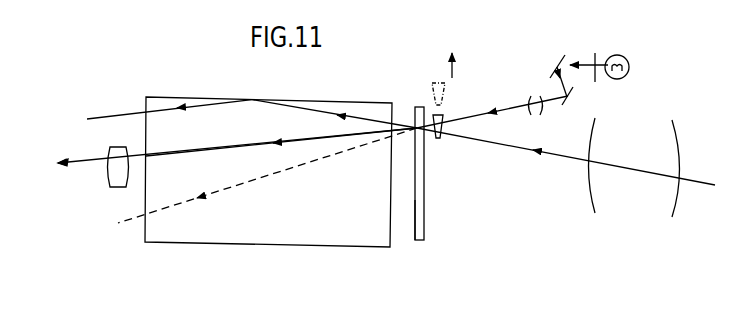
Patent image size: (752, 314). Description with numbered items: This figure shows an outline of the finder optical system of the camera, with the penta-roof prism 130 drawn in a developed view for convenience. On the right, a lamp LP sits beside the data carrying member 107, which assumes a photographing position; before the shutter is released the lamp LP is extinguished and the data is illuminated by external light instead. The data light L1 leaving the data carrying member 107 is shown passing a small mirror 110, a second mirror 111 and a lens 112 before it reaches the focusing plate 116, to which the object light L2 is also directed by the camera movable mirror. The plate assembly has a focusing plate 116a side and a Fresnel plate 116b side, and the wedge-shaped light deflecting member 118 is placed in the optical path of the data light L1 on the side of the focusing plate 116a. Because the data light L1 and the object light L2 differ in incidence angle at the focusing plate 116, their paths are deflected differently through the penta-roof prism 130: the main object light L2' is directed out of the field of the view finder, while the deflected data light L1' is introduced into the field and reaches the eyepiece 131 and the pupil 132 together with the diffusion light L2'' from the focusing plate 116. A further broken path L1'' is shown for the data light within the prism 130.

The data carrying member 107 is at (597, 53).
The mirror 110 is at (563, 55).
The mirror 111 is at (573, 93).
The lens 112 is at (530, 97).
The focusing plate 116 is at (421, 241).
The focusing plate 116a is at (423, 207).
The Fresnel plate 116b is at (413, 162).
The light deflecting member 118 is at (432, 98).
The penta-roof prism 130 is at (343, 100).
The eyepiece 131 is at (118, 185).
The pupil 132 is at (60, 168).
The lamp LP is at (628, 57).
The data light L1 is at (492, 96).
The deflected data light L1' is at (237, 158).
The light beam L1'' is at (267, 175).
The object light L2 is at (483, 146).
The deflected object light L2' is at (203, 89).
The diffusion light L2'' is at (281, 133).